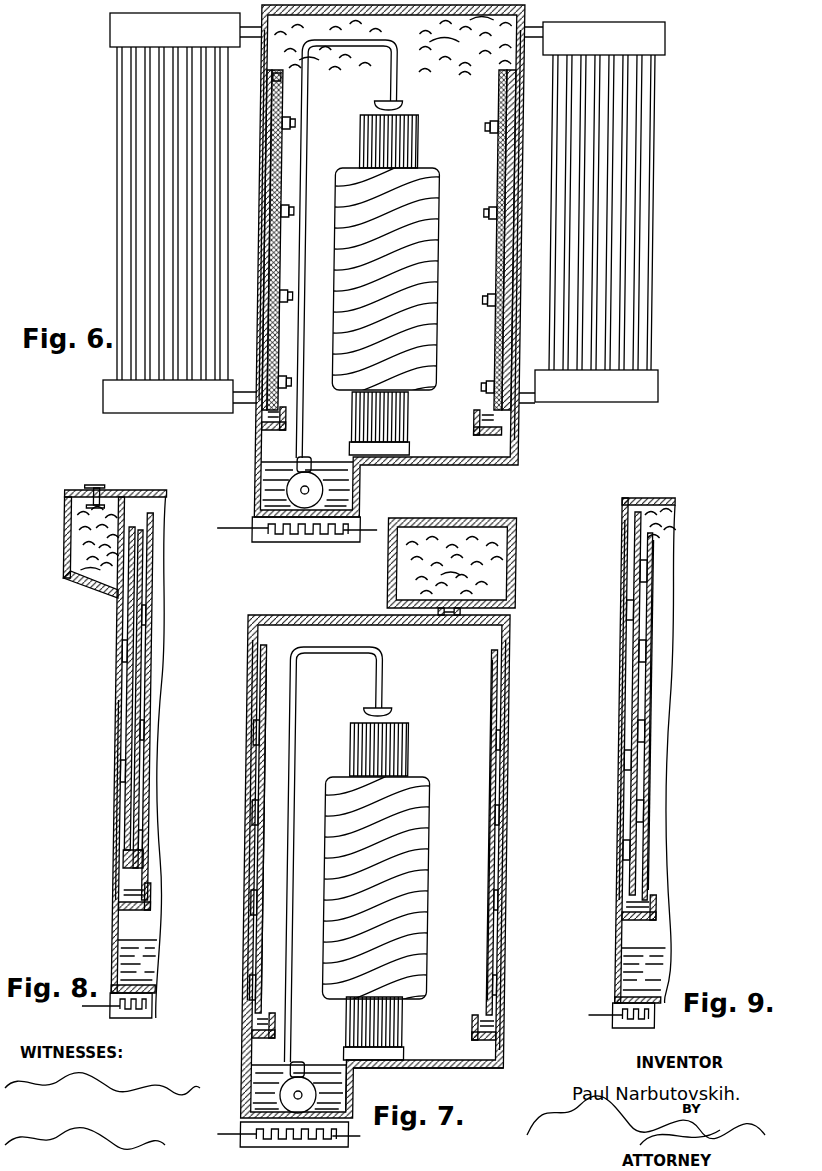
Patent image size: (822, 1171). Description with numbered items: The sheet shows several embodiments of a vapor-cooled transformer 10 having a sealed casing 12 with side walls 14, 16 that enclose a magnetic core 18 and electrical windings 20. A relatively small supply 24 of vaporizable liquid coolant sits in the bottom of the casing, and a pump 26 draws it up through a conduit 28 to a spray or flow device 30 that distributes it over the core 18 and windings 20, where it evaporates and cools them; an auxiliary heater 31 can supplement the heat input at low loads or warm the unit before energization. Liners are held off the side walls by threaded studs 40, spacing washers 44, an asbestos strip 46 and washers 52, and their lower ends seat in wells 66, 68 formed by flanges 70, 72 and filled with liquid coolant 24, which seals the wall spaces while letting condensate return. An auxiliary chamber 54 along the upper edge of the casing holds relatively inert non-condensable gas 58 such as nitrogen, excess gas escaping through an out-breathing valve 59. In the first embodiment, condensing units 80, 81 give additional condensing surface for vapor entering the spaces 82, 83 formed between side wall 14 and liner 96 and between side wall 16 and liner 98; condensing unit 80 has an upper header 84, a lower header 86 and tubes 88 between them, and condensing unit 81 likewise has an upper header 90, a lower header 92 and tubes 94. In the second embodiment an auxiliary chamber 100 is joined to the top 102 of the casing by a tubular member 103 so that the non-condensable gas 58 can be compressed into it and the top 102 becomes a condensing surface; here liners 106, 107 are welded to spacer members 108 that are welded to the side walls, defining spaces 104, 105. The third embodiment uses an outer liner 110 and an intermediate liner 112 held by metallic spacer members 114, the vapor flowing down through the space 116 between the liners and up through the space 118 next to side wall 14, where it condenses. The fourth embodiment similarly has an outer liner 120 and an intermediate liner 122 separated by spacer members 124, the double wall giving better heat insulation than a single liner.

In FIG. 7, the transformer 10 is at (375, 866).
In FIG. 6, the sealed casing 12 is at (476, 465).
In FIG. 7, the sealed casing 12 is at (482, 1068).
In FIG. 8, the sealed casing 12 is at (117, 628).
In FIG. 9, the sealed casing 12 is at (624, 814).
In FIG. 6, the side wall 14 is at (262, 268).
In FIG. 7, the side wall 14 is at (250, 835).
In FIG. 8, the side wall 14 is at (117, 700).
In FIG. 9, the side wall 14 is at (622, 688).
In FIG. 6, the side wall 16 is at (510, 250).
In FIG. 7, the side wall 16 is at (508, 852).
In FIG. 6, the magnetic core 18 is at (420, 148).
In FIG. 7, the magnetic core 18 is at (410, 760).
In FIG. 6, the electrical windings 20 is at (442, 200).
In FIG. 7, the electrical windings 20 is at (432, 852).
In FIG. 6, the supply of vaporizable liquid coolant 24 is at (268, 478).
In FIG. 7, the supply of vaporizable liquid coolant 24 is at (262, 1096).
In FIG. 8, the supply of vaporizable liquid coolant 24 is at (123, 952).
In FIG. 9, the supply of vaporizable liquid coolant 24 is at (630, 962).
In FIG. 6, the pump 26 is at (324, 474).
In FIG. 7, the pump 26 is at (318, 1083).
In FIG. 6, the conduit 28 is at (309, 200).
In FIG. 7, the conduit 28 is at (297, 855).
In FIG. 6, the spray or flow device 30 is at (400, 103).
In FIG. 7, the spray or flow device 30 is at (393, 712).
In FIG. 6, the auxiliary heater 31 is at (276, 532).
In FIG. 7, the auxiliary heater 31 is at (264, 1138).
In FIG. 8, the auxiliary heater 31 is at (143, 1009).
In FIG. 9, the auxiliary heater 31 is at (632, 1015).
In FIG. 6, the threaded studs 40 is at (297, 296).
In FIG. 6, the washers 44 is at (284, 300).
In FIG. 6, the strip 46 is at (272, 100).
In FIG. 7, the washers 52 is at (353, 1088).
In FIG. 8, the auxiliary chamber 54 is at (63, 512).
In FIG. 7, the non-condensable gas 58 is at (396, 575).
In FIG. 8, the non-condensable gas 58 is at (73, 542).
In FIG. 8, the out-breathing valves 59 is at (101, 491).
In FIG. 6, the well 66 is at (268, 428).
In FIG. 7, the well 66 is at (262, 1028).
In FIG. 8, the well 66 is at (124, 898).
In FIG. 9, the well 66 is at (630, 904).
In FIG. 6, the well 68 is at (508, 430).
In FIG. 6, the flange 70 is at (292, 418).
In FIG. 7, the flange 70 is at (281, 1026).
In FIG. 8, the flange 70 is at (152, 899).
In FIG. 9, the flange 70 is at (662, 908).
In FIG. 6, the flange 72 is at (482, 426).
In FIG. 7, the flange 72 is at (478, 1032).
In FIG. 6, the condensing unit 80 is at (117, 180).
In FIG. 6, the condensing unit 81 is at (654, 196).
In FIG. 6, the space 82 is at (268, 178).
In FIG. 6, the space 83 is at (517, 180).
In FIG. 6, the upper header 84 is at (110, 26).
In FIG. 6, the lower header 86 is at (103, 408).
In FIG. 6, the tubes 88 is at (117, 85).
In FIG. 6, the upper header 90 is at (646, 24).
In FIG. 6, the lower header 92 is at (658, 390).
In FIG. 6, the tubes 94 is at (656, 102).
In FIG. 6, the liner 96 is at (278, 74).
In FIG. 6, the liner 98 is at (500, 96).
In FIG. 7, the auxiliary chamber 100 is at (513, 560).
In FIG. 7, the top 102 is at (410, 625).
In FIG. 7, the tubular member 103 is at (462, 617).
In FIG. 7, the space 104 is at (261, 700).
In FIG. 7, the space 105 is at (499, 690).
In FIG. 7, the liner 106 is at (268, 788).
In FIG. 7, the liner 107 is at (492, 755).
In FIG. 7, the spacer members 108 is at (255, 727).
In FIG. 8, the outer liner 110 is at (149, 565).
In FIG. 8, the intermediate liner 112 is at (134, 796).
In FIG. 8, the metallic spacer members 114 is at (142, 704).
In FIG. 8, the space 116 is at (134, 656).
In FIG. 8, the space 118 is at (118, 803).
In FIG. 9, the outer liner 120 is at (656, 561).
In FIG. 9, the intermediate liner 122 is at (642, 584).
In FIG. 9, the spacer members 124 is at (653, 626).